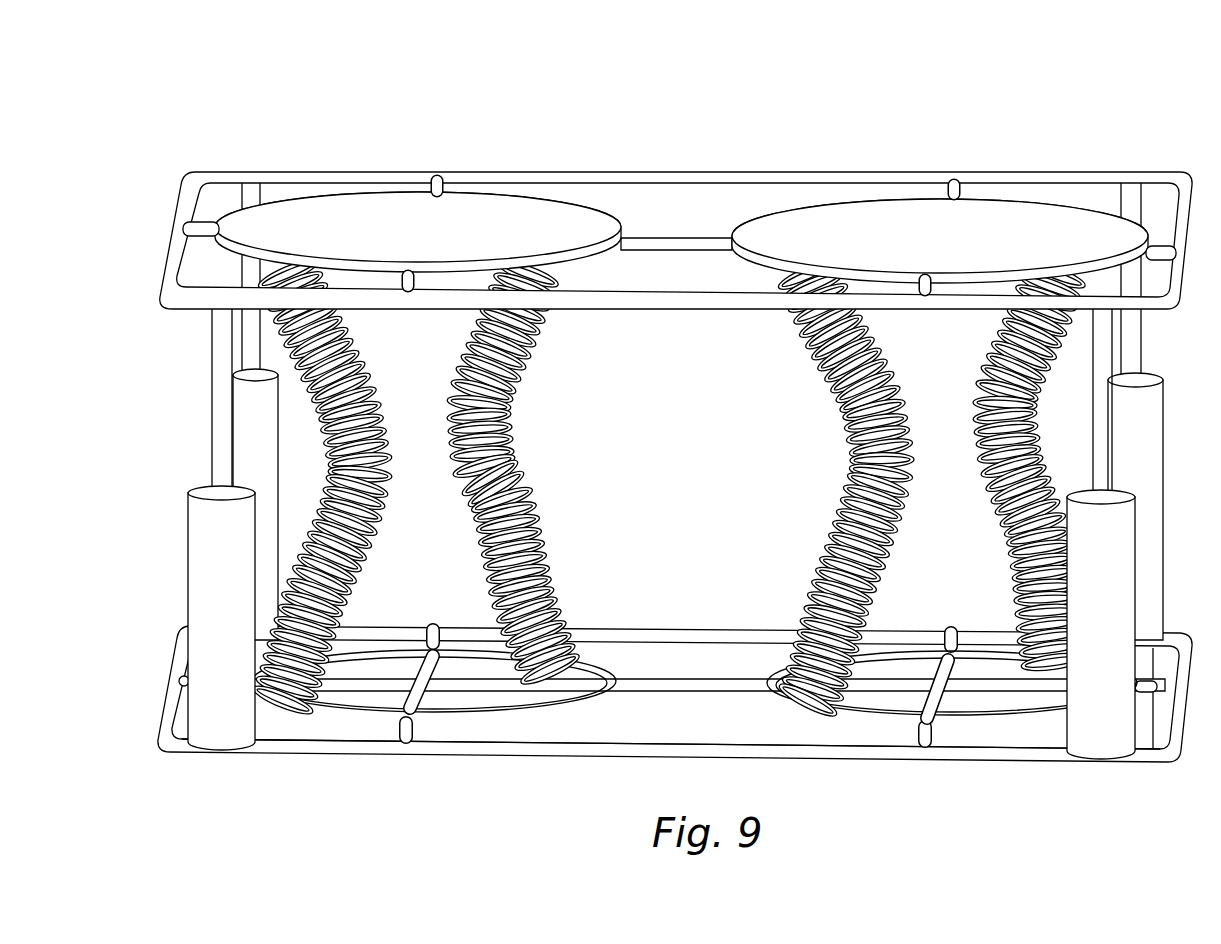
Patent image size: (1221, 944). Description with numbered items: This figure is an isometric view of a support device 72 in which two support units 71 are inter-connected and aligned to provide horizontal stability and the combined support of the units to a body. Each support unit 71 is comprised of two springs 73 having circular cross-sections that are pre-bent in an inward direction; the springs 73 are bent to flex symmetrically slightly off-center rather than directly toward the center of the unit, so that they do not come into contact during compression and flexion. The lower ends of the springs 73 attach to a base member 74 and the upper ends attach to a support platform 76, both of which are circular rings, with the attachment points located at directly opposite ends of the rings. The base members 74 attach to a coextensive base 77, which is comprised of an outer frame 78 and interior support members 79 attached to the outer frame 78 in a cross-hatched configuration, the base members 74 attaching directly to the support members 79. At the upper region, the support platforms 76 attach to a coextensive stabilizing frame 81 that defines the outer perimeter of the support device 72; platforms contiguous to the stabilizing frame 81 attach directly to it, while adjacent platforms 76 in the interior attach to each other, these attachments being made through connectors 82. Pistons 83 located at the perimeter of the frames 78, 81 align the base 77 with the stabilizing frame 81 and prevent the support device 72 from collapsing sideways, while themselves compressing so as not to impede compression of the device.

The support unit 71 is at (669, 488).
The support device 72 is at (654, 166).
The spring 73 is at (513, 390).
The base member 74 is at (592, 700).
The support platform 76 is at (467, 203).
The base 77 is at (675, 739).
The outer frame 78 is at (963, 760).
The interior support member 79 is at (655, 685).
The stabilizing frame 81 is at (185, 189).
The connector 82 is at (433, 178).
The piston 83 is at (695, 505).